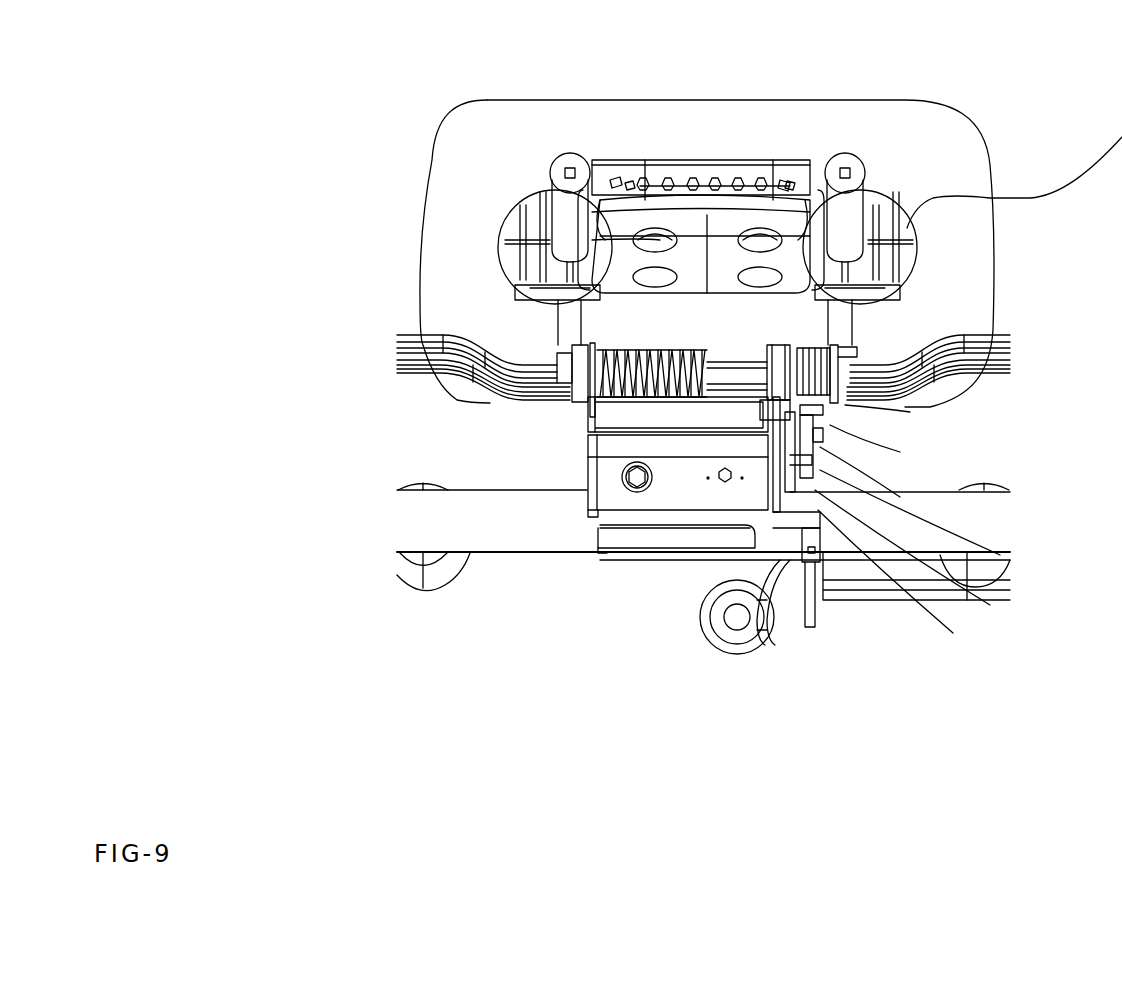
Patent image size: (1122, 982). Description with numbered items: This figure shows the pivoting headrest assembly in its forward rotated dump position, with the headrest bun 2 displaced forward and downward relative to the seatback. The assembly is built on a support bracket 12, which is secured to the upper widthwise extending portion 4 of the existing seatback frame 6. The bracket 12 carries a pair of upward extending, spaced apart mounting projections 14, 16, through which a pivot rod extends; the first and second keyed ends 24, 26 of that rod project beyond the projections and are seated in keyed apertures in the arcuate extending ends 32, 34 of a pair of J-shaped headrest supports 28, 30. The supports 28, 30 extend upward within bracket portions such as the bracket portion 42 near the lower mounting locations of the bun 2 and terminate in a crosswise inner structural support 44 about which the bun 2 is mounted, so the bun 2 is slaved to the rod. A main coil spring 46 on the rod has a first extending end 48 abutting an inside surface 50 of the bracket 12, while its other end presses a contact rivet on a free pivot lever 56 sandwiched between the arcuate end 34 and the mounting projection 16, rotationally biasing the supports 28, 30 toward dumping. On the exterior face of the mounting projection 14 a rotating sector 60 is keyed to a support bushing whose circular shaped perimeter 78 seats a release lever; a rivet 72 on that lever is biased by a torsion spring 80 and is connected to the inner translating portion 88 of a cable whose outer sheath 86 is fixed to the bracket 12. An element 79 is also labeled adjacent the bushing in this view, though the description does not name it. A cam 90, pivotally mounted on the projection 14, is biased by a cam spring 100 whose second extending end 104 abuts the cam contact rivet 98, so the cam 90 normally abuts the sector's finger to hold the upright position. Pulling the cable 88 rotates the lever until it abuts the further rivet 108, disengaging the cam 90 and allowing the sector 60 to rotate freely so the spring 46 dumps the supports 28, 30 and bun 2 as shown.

The headrest bun 2 is at (418, 255).
The upper widthwise extending portion 4 is at (527, 523).
The frame 6 is at (1010, 355).
The support bracket 12 is at (617, 492).
The mounting projection 14 is at (900, 452).
The mounting projection 16 is at (590, 412).
The first keyed end 24 is at (843, 407).
The second keyed end 26 is at (570, 402).
The headrest support 28 is at (850, 330).
The headrest support 30 is at (575, 320).
The arcuate extending end 32 is at (843, 411).
The arcuate extending end 34 is at (573, 405).
The bracket portion 42 is at (508, 223).
The inner structural support 44 is at (690, 263).
The main coil spring 46 is at (657, 350).
The first extending end 48 is at (900, 497).
The inside surface 50 is at (697, 430).
The free pivot lever 56 is at (580, 353).
The rotating sector 60 is at (770, 346).
The rivet 72 is at (823, 413).
The circular shaped perimeter 78 is at (797, 350).
The collar 79 is at (785, 347).
The torsion spring 80 is at (815, 343).
The outer sheath 86 is at (953, 633).
The inner translating portion 88 is at (990, 605).
The cam 90 is at (790, 470).
The contact rivet 98 is at (1000, 555).
The cam spring 100 is at (810, 457).
The second extending end 104 is at (797, 455).
The rivet 108 is at (760, 407).